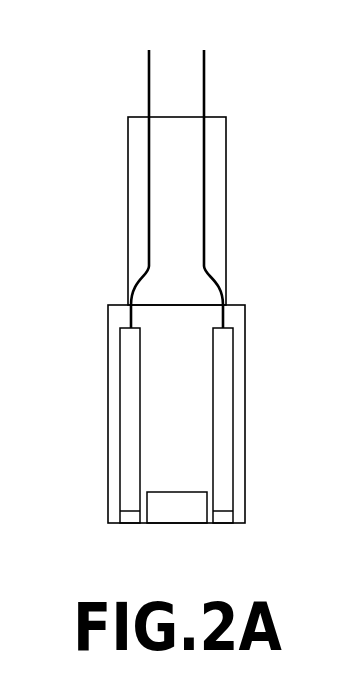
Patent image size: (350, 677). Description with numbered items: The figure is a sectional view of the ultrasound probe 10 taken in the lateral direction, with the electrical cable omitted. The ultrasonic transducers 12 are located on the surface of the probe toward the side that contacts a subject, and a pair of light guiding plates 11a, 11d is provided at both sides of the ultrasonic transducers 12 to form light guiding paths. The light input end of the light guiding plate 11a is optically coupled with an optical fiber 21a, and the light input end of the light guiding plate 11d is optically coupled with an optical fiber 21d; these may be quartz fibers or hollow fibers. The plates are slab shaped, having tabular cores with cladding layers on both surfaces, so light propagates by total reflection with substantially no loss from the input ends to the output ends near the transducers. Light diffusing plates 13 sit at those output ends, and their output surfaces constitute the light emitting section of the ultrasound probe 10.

The ultrasound probe 10 is at (226, 190).
The optical fiber 21a is at (148, 68).
The optical fiber 21d is at (206, 66).
The light guiding plate 11a is at (119, 405).
The light guiding plate 11d is at (234, 405).
The ultrasonic transducers 12 is at (177, 524).
The light diffusing plates 13 is at (130, 524).